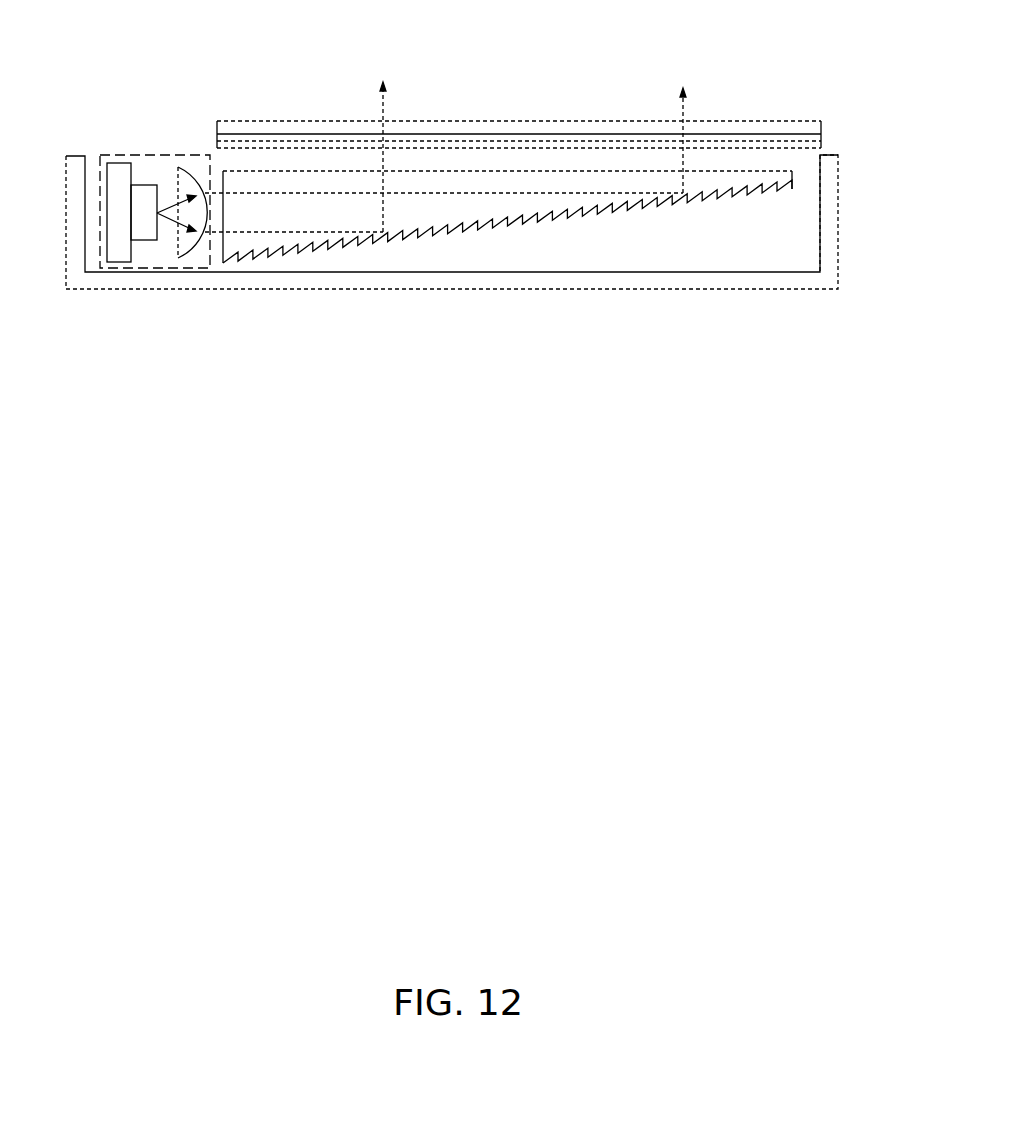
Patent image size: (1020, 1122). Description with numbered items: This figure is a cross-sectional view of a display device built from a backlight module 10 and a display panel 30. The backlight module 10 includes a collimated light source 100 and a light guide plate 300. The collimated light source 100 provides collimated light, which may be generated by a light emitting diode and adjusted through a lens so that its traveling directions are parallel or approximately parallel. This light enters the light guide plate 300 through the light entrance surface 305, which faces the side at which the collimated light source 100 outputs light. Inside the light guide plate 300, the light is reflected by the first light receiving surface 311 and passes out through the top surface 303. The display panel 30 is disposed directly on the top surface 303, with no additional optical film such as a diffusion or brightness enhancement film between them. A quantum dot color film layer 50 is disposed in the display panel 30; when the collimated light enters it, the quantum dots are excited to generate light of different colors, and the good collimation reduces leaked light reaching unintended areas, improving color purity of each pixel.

The backlight module 10 is at (845, 155).
The display panel 30 is at (549, 103).
The quantum dot color film layer 50 is at (262, 137).
The collimated light source 100 is at (100, 248).
The light guide plate 300 is at (504, 219).
The top surface 303 is at (728, 170).
The light entrance surface 305 is at (223, 258).
The first light receiving surface 311 is at (470, 225).